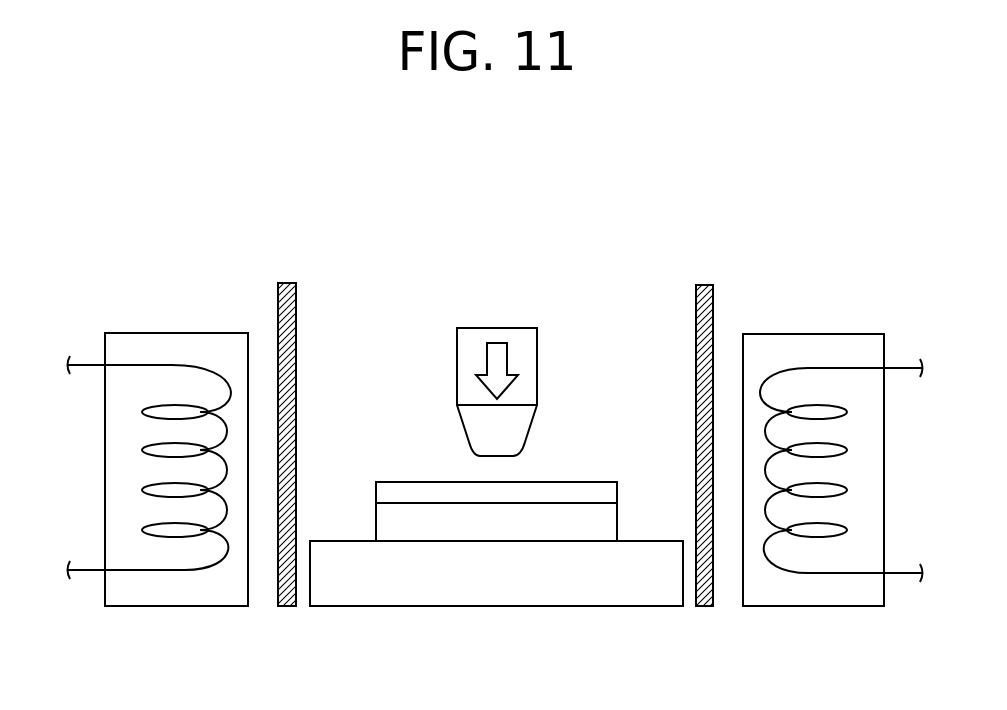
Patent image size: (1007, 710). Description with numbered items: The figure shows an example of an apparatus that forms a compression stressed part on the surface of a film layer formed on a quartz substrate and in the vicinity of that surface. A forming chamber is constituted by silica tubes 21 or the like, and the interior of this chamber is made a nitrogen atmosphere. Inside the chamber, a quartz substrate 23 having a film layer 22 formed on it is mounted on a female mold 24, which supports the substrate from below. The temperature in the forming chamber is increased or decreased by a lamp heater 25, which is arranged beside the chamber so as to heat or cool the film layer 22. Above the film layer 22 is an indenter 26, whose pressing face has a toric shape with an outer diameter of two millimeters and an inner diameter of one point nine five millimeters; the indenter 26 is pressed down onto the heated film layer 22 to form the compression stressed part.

The silica tube 21 is at (280, 313).
The film layer 22 is at (373, 480).
The quartz substrate 23 is at (373, 514).
The female mold 24 is at (505, 575).
The lamp heater 25 is at (160, 342).
The indenter 26 is at (474, 333).